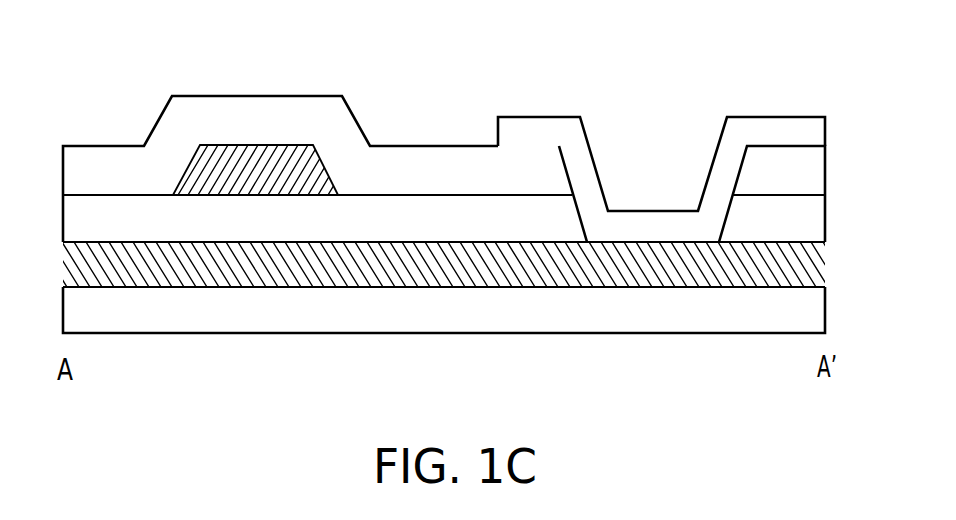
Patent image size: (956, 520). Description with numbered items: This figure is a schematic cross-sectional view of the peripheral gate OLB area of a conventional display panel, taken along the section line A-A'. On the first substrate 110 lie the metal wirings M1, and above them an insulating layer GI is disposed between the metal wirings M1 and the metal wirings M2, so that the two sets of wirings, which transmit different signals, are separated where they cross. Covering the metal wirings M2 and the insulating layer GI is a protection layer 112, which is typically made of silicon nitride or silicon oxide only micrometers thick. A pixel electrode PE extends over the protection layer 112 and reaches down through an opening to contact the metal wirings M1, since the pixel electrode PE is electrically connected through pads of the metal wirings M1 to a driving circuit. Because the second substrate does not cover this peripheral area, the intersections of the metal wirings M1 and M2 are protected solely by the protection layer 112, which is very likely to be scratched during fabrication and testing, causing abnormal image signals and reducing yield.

The first substrate 110 is at (692, 312).
The metal wirings M1 is at (748, 265).
The insulating layer GI is at (415, 218).
The metal wirings M2 is at (220, 163).
The protection layer 112 is at (304, 112).
The pixel electrode PE is at (778, 127).